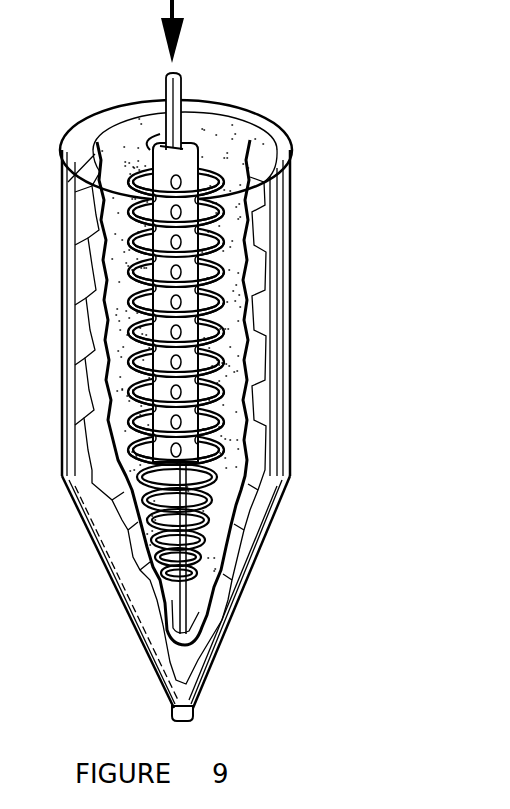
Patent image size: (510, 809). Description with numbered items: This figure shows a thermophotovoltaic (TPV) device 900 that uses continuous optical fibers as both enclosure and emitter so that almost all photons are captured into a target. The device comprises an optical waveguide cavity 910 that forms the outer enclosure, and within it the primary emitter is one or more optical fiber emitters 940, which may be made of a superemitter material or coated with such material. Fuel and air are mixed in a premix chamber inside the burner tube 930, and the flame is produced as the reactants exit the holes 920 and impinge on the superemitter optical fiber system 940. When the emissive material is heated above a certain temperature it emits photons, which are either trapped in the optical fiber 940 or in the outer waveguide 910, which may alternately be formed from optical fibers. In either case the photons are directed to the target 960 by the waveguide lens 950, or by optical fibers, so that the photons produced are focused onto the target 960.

The TPV device 900 is at (236, 397).
The optical waveguide cavity 910 is at (275, 355).
The holes 920 is at (205, 162).
The burner tube 930 is at (200, 153).
The optical fiber emitter 940 is at (197, 575).
The waveguide lens 950 is at (183, 672).
The target 960 is at (180, 724).